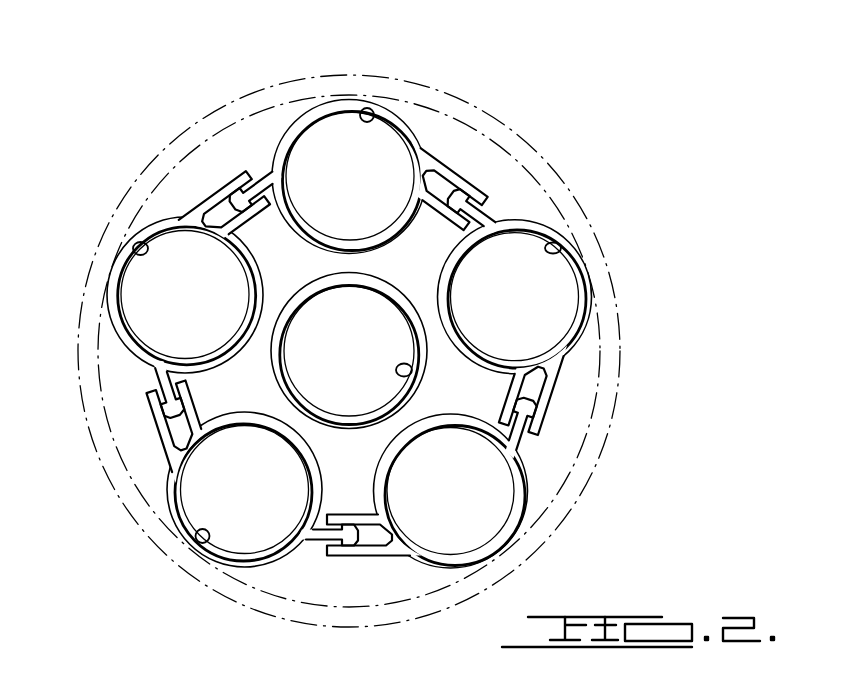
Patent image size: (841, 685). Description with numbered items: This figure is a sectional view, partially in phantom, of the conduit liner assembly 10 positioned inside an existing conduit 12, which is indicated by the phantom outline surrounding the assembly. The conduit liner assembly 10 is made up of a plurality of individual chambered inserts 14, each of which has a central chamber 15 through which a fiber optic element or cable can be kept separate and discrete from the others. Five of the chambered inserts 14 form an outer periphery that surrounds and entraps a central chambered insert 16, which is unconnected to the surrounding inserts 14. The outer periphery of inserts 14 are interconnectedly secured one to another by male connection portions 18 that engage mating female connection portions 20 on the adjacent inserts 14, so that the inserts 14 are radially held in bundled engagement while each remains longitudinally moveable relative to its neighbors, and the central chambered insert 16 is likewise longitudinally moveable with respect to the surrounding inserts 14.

The conduit liner assembly 10 is at (167, 63).
The conduit 12 is at (145, 171).
The chambered insert 14 is at (319, 96).
The central chamber 15 is at (365, 110).
The central chambered insert 16 is at (357, 422).
The male connection portion 18 is at (277, 183).
The female connection portion 20 is at (452, 168).